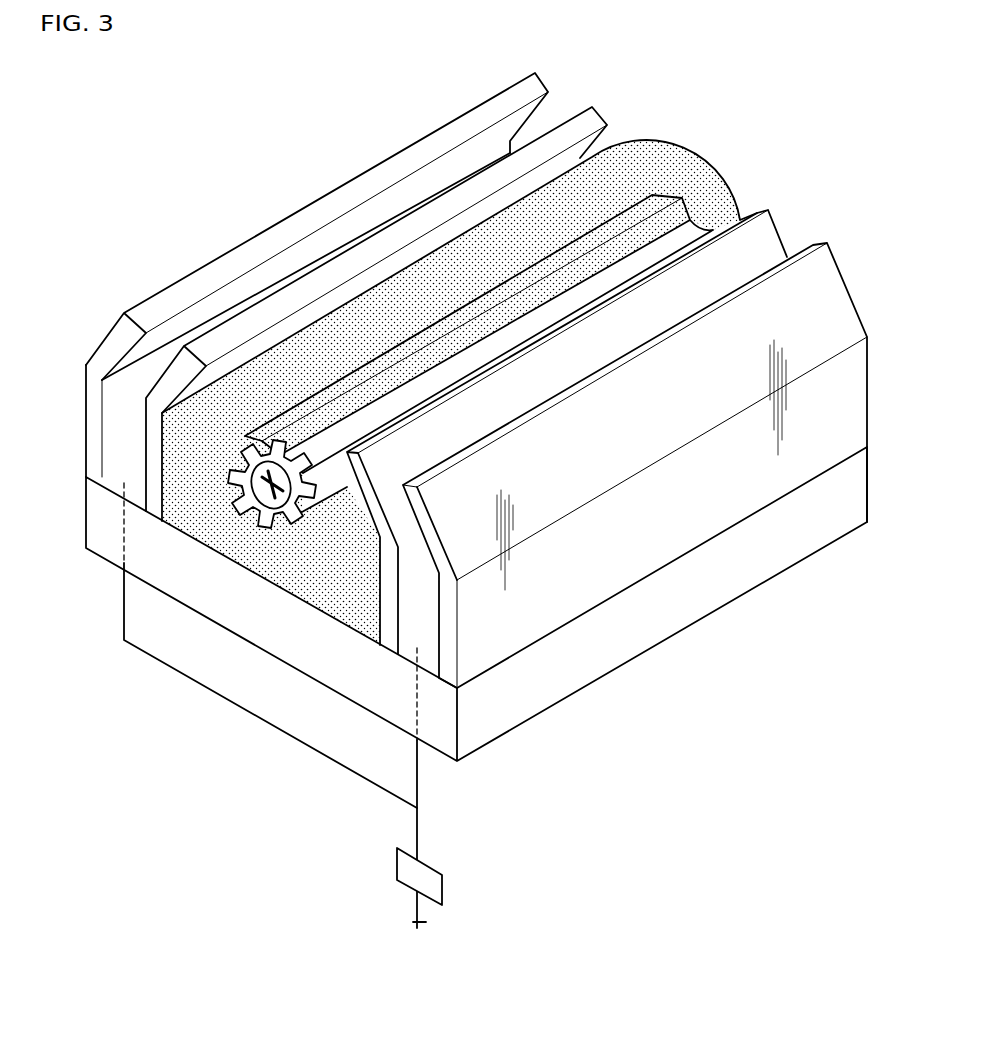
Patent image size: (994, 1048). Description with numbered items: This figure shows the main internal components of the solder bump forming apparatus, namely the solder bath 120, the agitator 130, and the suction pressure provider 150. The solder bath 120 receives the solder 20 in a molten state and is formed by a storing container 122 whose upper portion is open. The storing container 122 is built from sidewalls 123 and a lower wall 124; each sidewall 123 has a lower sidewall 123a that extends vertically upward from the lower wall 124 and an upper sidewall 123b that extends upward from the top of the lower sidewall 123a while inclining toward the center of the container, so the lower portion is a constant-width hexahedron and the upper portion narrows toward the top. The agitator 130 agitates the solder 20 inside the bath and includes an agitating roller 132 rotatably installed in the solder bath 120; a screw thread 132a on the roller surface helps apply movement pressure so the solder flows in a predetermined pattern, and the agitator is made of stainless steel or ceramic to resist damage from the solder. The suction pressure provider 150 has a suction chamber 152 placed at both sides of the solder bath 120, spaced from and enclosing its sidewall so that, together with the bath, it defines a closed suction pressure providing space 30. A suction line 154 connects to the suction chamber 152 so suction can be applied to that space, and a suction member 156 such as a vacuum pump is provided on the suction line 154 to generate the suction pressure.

The solder 20 is at (297, 560).
The suction pressure providing space 30 is at (417, 600).
The solder bath 120 is at (493, 179).
The storing container 122 is at (312, 314).
The sidewalls 123 is at (352, 314).
The lower sidewall 123a is at (127, 420).
The upper sidewall 123b is at (160, 400).
The lower wall 124 is at (85, 390).
The agitator 130 is at (652, 192).
The agitating roller 132 is at (184, 402).
The screw thread 132a is at (258, 438).
The suction pressure provider 150 is at (495, 617).
The suction chamber 152 is at (635, 493).
The suction line 154 is at (420, 770).
The suction member 156 is at (437, 890).